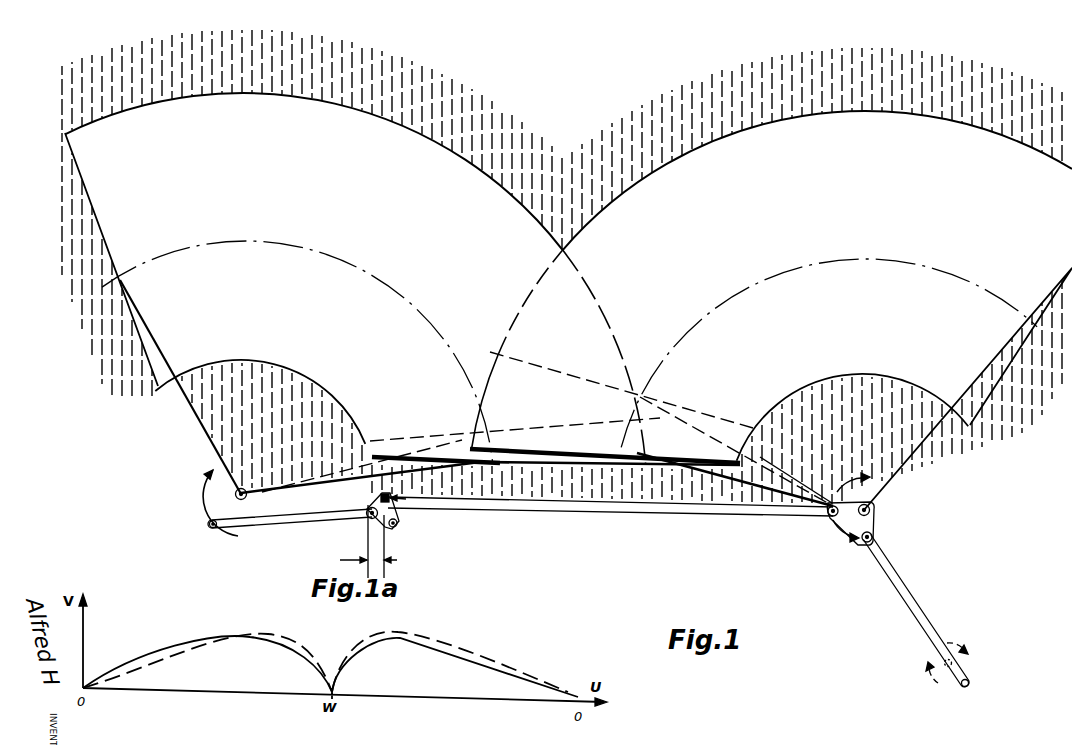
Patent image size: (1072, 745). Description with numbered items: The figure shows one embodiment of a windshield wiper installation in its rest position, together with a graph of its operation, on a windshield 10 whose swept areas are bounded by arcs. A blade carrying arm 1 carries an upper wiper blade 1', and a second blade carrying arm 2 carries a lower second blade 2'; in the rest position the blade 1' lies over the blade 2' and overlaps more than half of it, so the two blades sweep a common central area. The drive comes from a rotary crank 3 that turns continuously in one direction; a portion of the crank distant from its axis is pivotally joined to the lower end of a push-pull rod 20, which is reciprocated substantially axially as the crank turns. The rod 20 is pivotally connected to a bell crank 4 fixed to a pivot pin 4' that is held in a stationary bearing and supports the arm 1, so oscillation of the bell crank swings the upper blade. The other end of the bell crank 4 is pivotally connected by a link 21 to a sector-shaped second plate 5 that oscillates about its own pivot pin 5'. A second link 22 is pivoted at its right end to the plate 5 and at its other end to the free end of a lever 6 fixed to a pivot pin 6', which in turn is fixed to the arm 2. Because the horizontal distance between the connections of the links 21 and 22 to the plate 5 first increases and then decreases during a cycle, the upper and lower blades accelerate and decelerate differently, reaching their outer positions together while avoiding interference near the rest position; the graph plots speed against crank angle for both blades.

In FIG. 1, the windshield 10 is at (567, 270).
In FIG. 1, the blade carrying arm 1 is at (735, 471).
In FIG. 1A, the blade carrying arm 1 is at (330, 663).
In FIG. 1, the wiper blade 1' is at (611, 407).
In FIG. 1, the second blade carrying arm 2 is at (490, 489).
In FIG. 1A, the second blade carrying arm 2 is at (325, 651).
In FIG. 1, the second blade 2' is at (515, 432).
In FIG. 1, the link 21 is at (609, 506).
In FIG. 1, the second link 22 is at (303, 520).
In FIG. 1, the rotary crank 3 is at (966, 662).
In FIG. 1, the bell crank 4 is at (844, 516).
In FIG. 1, the pivot pin 4' is at (884, 500).
In FIG. 1, the second plate 5 is at (373, 535).
In FIG. 1, the pivot pin 5' is at (407, 524).
In FIG. 1, the lever 6 is at (202, 503).
In FIG. 1, the pivot pin 6' is at (251, 482).
In FIG. 1, the push-pull rod 20 is at (908, 593).